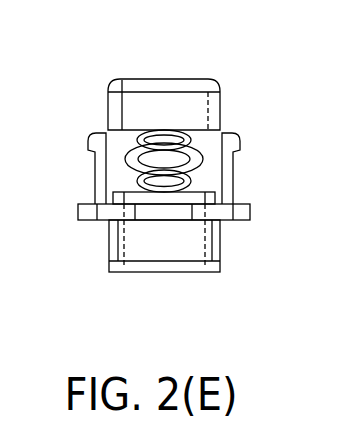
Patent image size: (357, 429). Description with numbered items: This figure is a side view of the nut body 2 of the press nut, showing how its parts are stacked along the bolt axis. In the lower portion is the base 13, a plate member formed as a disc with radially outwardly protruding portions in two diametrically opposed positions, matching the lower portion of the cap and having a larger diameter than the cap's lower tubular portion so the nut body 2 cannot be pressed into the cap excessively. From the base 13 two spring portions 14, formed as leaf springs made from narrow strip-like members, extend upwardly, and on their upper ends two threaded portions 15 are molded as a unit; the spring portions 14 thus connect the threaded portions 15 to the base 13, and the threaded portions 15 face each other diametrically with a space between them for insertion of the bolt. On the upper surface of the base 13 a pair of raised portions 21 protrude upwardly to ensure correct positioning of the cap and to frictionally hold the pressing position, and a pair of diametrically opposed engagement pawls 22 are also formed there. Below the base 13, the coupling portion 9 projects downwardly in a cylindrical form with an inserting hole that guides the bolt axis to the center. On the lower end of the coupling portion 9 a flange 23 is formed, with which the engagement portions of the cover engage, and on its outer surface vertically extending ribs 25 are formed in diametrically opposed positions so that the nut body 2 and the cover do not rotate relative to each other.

The nut body 2 is at (244, 83).
The coupling portion 9 is at (135, 247).
The base 13 is at (227, 217).
The spring portions 14 is at (163, 152).
The threaded portions 15 is at (175, 80).
The raised portions 21 is at (203, 197).
The engagement pawls 22 is at (97, 142).
The flange 23 is at (178, 267).
The ribs 25 is at (115, 234).